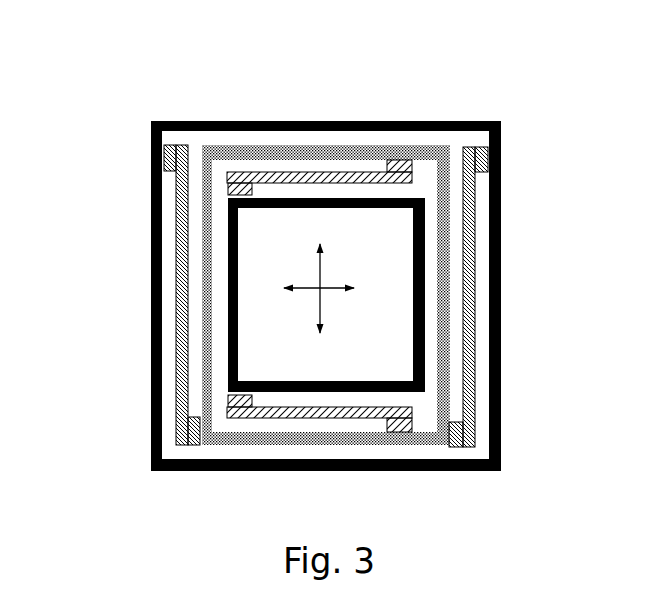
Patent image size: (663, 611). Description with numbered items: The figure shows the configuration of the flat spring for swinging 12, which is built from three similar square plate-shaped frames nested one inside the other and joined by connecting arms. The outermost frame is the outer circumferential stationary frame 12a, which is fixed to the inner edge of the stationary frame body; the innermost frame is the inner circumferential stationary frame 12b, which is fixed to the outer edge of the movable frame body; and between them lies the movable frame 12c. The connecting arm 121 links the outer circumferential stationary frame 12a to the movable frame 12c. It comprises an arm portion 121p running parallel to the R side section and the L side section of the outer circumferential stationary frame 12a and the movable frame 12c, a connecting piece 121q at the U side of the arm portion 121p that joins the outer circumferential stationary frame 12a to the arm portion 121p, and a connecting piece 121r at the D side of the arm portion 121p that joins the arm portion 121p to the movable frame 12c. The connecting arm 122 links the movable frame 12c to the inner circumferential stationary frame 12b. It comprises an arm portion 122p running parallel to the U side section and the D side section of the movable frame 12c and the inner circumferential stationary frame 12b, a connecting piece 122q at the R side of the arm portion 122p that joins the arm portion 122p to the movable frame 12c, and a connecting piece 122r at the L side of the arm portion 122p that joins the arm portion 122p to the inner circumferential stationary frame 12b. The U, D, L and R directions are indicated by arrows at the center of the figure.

The flat spring for swinging 12 is at (448, 115).
The outer circumferential stationary frame 12a is at (500, 267).
The inner circumferential stationary frame 12b is at (425, 323).
The movable frame 12c is at (443, 213).
The connecting arm 121 is at (72, 180).
The arm portion 121p is at (182, 267).
The connecting piece 121q is at (166, 160).
The connecting piece 121r is at (178, 395).
The connecting arm 122 is at (365, 58).
The arm portion 122p is at (303, 177).
The connecting piece 122q is at (393, 164).
The connecting piece 122r is at (237, 187).